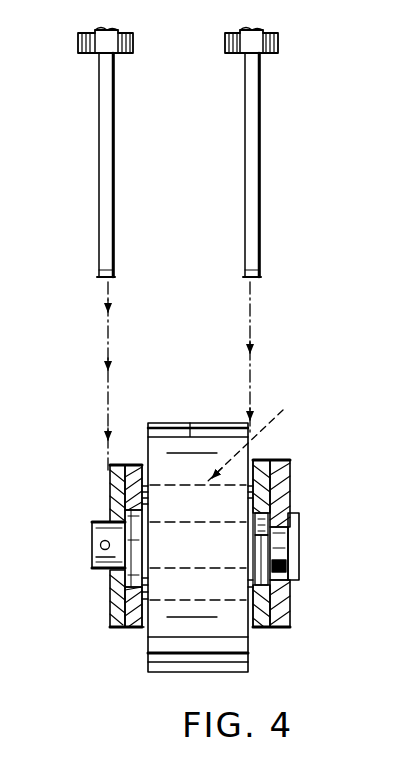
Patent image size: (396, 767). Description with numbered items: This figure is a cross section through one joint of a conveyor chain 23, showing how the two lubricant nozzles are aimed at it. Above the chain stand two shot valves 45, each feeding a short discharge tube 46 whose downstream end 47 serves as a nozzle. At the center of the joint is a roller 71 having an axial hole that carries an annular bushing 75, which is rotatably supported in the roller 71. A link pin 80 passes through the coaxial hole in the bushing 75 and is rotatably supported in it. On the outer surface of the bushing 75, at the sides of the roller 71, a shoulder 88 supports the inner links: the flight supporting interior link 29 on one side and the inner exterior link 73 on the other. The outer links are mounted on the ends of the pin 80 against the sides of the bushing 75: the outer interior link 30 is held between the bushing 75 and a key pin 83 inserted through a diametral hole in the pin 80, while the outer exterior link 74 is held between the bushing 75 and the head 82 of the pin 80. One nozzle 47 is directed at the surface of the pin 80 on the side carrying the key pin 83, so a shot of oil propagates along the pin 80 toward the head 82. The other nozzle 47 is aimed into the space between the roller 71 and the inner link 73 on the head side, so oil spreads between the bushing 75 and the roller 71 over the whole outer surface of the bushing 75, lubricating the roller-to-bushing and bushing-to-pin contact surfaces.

The shot valve 45 is at (220, 44).
The discharge tube 46 is at (244, 217).
The downstream end 47 is at (250, 280).
The roller 71 is at (190, 429).
The annular bushing 75 is at (261, 439).
The chain 23 is at (300, 457).
The head 82 is at (299, 513).
The link pin 80 is at (97, 570).
The shoulder 88 is at (133, 556).
The key pin 83 is at (92, 543).
The outer interior link 30 is at (112, 605).
The inner interior link 29 is at (136, 630).
The outer exterior link 74 is at (284, 607).
The inner exterior link 73 is at (262, 630).